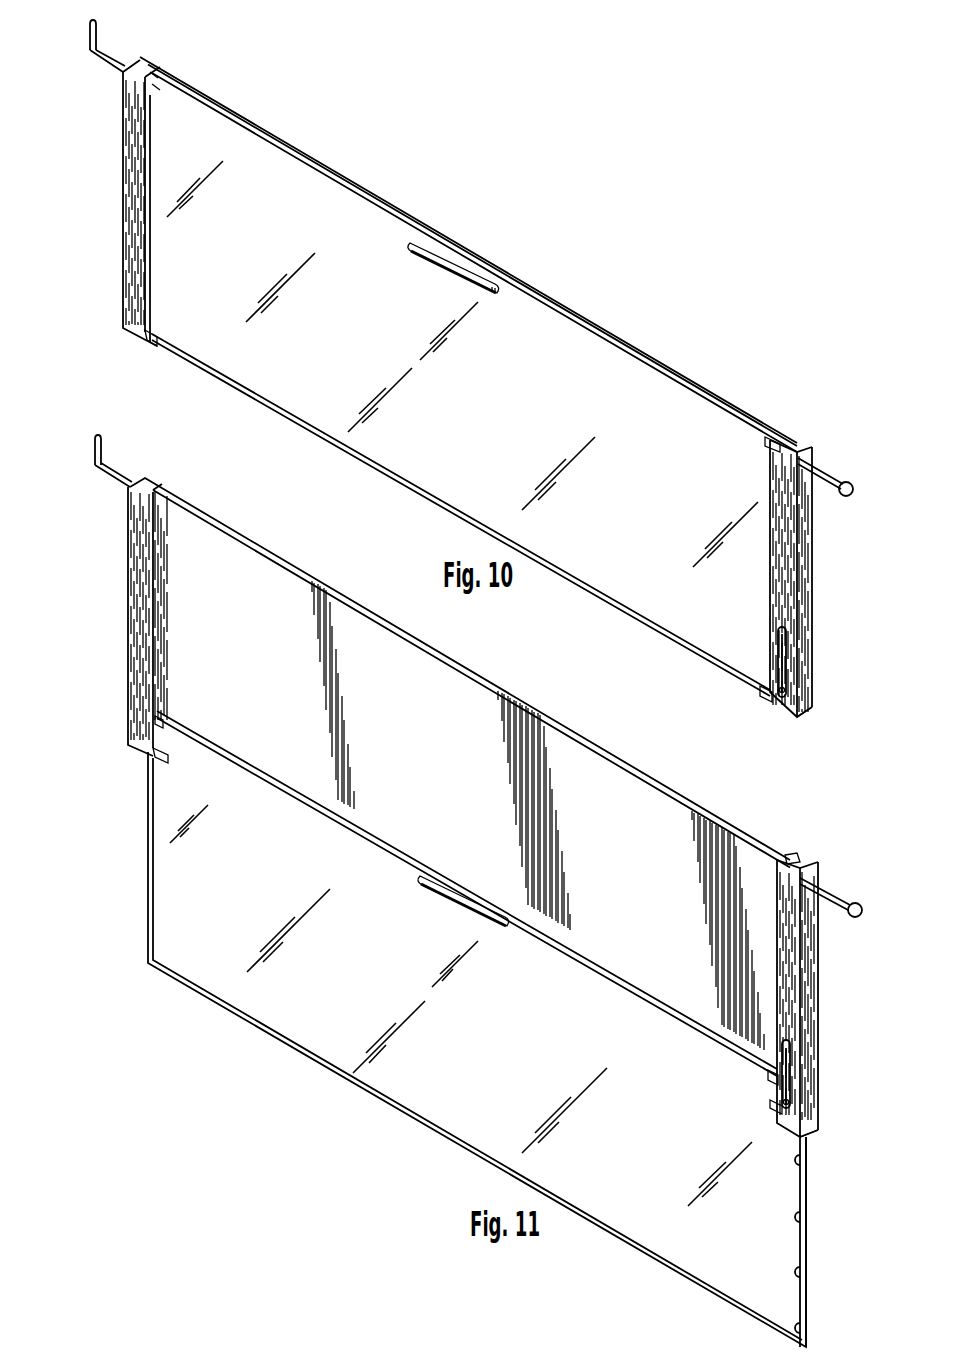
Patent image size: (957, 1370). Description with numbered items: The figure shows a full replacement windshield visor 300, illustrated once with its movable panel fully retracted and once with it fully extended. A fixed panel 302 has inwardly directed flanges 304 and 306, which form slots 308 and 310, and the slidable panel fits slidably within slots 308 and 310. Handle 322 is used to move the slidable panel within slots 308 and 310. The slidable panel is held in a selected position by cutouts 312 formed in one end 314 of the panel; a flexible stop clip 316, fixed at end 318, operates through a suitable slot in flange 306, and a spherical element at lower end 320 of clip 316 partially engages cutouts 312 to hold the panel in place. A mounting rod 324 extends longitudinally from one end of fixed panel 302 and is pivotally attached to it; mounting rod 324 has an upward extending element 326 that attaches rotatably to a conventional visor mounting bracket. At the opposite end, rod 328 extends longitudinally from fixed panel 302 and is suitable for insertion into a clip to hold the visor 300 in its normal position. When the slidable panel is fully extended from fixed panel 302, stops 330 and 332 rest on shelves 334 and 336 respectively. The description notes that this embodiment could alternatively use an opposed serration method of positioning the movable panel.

In FIG. 10, the full replacement windshield visor 300 is at (812, 580).
In FIG. 11, the full replacement windshield visor 300 is at (143, 832).
In FIG. 11, the fixed panel 302 is at (642, 783).
In FIG. 10, the inwardly directed flange 304 is at (132, 195).
In FIG. 11, the inwardly directed flange 304 is at (140, 612).
In FIG. 10, the inwardly directed flange 306 is at (805, 505).
In FIG. 11, the inwardly directed flange 306 is at (803, 928).
In FIG. 11, the slot 308 is at (160, 490).
In FIG. 11, the slot 310 is at (798, 858).
In FIG. 11, the cutouts 312 is at (808, 1272).
In FIG. 11, the end of slidable panel 314 is at (808, 1192).
In FIG. 10, the flexible stop clip 316 is at (790, 678).
In FIG. 11, the flexible stop clip 316 is at (792, 1072).
In FIG. 10, the end of clip 318 is at (786, 632).
In FIG. 11, the end of clip 318 is at (790, 1047).
In FIG. 10, the lower end of clip 320 is at (800, 715).
In FIG. 11, the lower end of clip 320 is at (788, 1122).
In FIG. 10, the handle 322 is at (435, 262).
In FIG. 11, the handle 322 is at (448, 906).
In FIG. 10, the mounting rod 324 is at (115, 68).
In FIG. 11, the mounting rod 324 is at (118, 484).
In FIG. 10, the upward extending element 326 is at (100, 42).
In FIG. 11, the upward extending element 326 is at (97, 455).
In FIG. 10, the rod 328 is at (820, 476).
In FIG. 11, the rod 328 is at (838, 897).
In FIG. 10, the stop 330 is at (153, 96).
In FIG. 11, the stop 330 is at (165, 727).
In FIG. 10, the stop 332 is at (770, 448).
In FIG. 11, the stop 332 is at (772, 1078).
In FIG. 10, the shelf 334 is at (160, 331).
In FIG. 11, the shelf 334 is at (163, 760).
In FIG. 10, the shelf 336 is at (766, 687).
In FIG. 11, the shelf 336 is at (772, 1104).